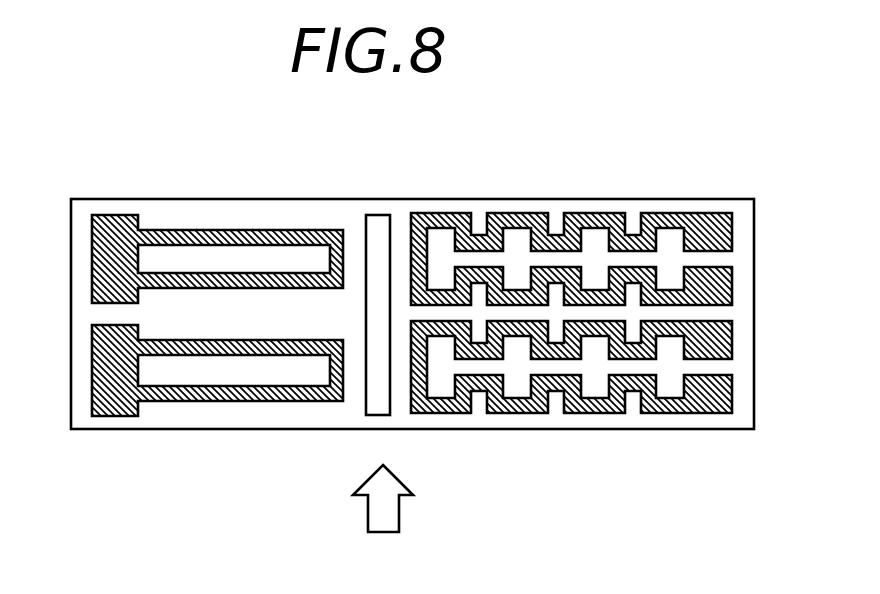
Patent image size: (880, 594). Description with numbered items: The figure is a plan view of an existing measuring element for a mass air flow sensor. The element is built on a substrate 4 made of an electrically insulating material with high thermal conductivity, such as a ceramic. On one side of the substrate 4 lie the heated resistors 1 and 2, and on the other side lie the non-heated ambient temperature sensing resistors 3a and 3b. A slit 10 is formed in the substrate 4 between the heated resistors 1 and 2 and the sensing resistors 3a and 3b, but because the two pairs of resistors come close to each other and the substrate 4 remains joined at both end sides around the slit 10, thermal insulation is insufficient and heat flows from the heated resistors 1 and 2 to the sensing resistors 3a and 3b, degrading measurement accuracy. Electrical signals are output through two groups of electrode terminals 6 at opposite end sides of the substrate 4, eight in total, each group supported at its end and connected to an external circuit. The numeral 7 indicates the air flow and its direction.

The heated resistor 1 is at (182, 227).
The heated resistor 2 is at (190, 402).
The non-heated ambient temperature sensing resistor 3a is at (602, 212).
The non-heated ambient temperature sensing resistor 3b is at (598, 414).
The substrate 4 is at (284, 214).
The electrode terminals 6 is at (733, 231).
The air flow 7 is at (399, 521).
The slit 10 is at (378, 214).